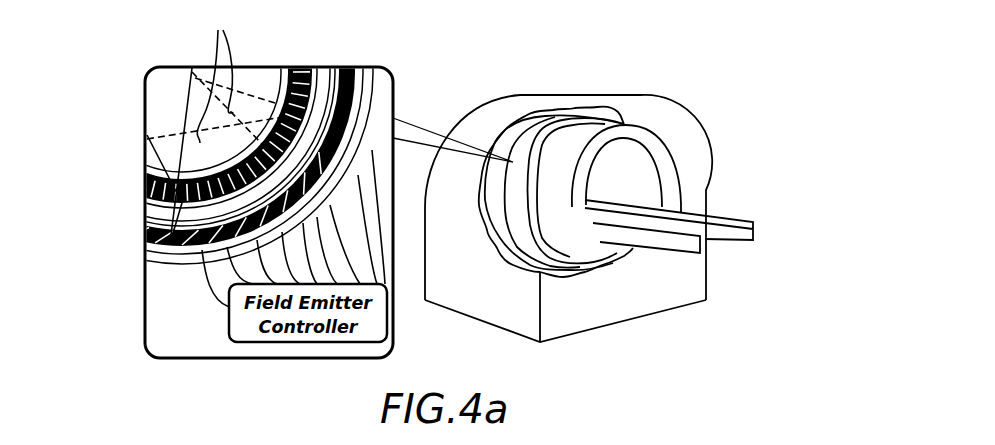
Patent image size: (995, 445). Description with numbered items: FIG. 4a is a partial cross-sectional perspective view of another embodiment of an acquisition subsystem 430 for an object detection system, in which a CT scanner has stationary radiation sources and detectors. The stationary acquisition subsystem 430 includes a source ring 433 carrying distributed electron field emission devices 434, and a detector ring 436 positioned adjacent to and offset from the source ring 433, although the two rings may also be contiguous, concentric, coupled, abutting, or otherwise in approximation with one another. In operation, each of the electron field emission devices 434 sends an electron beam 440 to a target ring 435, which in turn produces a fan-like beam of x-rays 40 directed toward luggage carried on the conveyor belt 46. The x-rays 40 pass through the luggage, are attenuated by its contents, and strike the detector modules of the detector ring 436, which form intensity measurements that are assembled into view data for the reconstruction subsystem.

The x-rays 40 is at (84, 106).
The conveyor belt 46 is at (722, 236).
The acquisition subsystem 430 is at (756, 103).
The source ring 433 is at (543, 133).
The electron field emission devices 434 is at (207, 237).
The target ring 435 is at (147, 192).
The detector ring 436 is at (690, 163).
The electron beam 440 is at (147, 228).